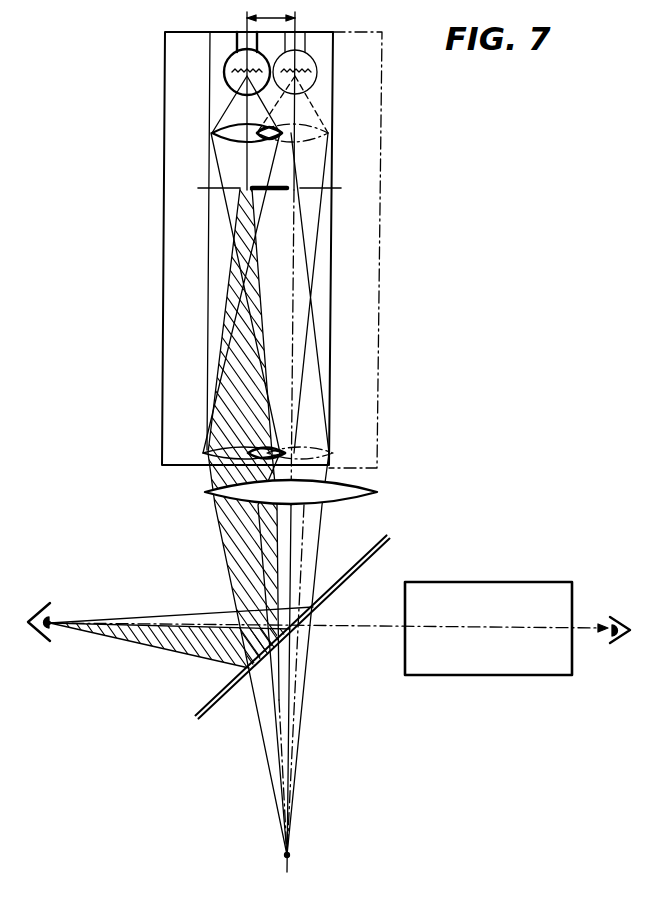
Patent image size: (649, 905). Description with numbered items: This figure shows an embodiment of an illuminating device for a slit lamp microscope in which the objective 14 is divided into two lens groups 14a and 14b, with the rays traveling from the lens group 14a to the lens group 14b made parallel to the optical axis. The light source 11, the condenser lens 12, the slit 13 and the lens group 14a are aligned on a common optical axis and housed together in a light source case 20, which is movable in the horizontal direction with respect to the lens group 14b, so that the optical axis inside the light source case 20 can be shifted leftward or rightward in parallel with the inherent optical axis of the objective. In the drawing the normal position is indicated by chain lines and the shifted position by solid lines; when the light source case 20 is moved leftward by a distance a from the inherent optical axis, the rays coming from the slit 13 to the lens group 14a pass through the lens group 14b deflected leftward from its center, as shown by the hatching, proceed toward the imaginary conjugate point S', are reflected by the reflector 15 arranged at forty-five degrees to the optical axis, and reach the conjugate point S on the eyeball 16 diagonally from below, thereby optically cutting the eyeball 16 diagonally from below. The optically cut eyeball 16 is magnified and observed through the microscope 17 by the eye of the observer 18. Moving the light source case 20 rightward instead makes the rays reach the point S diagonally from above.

The light source 11 is at (233, 60).
The condenser lens 12 is at (225, 119).
The slit 13 is at (243, 186).
The objective 14 is at (240, 485).
The lens group 14a is at (202, 457).
The lens group 14b is at (222, 497).
The reflector 15 is at (392, 552).
The eyeball 16 is at (53, 617).
The microscope 17 is at (493, 592).
The eye of the observer 18 is at (611, 618).
The light source case 20 is at (163, 289).
The distance a is at (298, 19).
The point S is at (65, 649).
The imaginary conjugate point S' is at (304, 835).